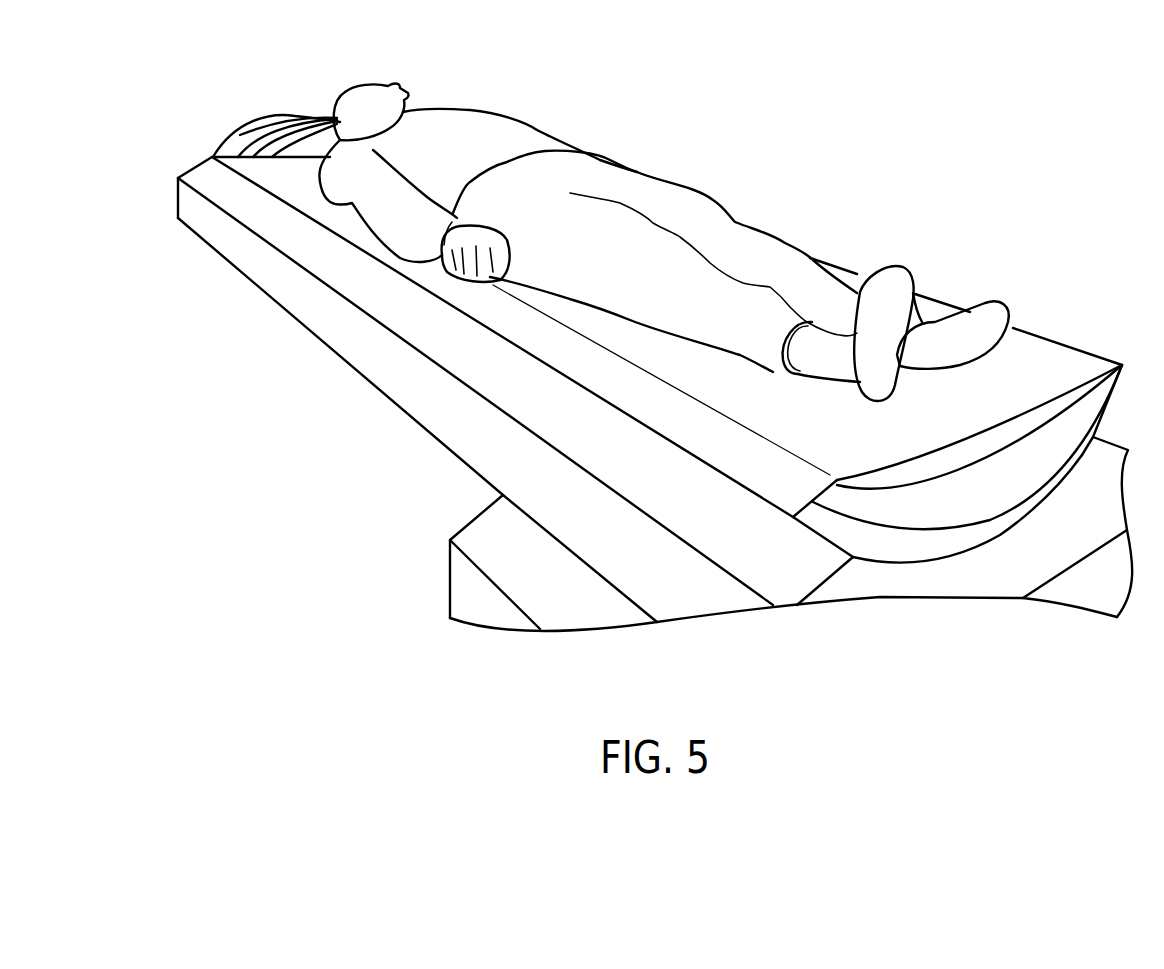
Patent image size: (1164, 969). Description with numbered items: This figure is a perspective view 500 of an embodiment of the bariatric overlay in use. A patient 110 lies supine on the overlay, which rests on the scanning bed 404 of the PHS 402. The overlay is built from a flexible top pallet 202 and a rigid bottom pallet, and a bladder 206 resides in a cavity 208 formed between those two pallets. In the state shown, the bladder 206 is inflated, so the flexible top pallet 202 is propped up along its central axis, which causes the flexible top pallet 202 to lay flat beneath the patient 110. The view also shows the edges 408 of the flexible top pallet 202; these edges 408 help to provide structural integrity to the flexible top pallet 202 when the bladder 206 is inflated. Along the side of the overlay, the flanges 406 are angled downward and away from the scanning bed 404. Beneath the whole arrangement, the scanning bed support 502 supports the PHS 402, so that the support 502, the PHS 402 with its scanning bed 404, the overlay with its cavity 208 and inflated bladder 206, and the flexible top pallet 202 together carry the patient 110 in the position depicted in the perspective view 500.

The perspective view 500 is at (968, 105).
The patient 110 is at (623, 177).
The flexible top pallet 202 is at (1003, 387).
The bladder 206 is at (1017, 490).
The cavity 208 is at (1097, 397).
The PHS 402 is at (352, 399).
The scanning bed 404 is at (338, 322).
The flanges 406 is at (262, 216).
The edges 408 is at (258, 176).
The scanning bed support 502 is at (488, 528).